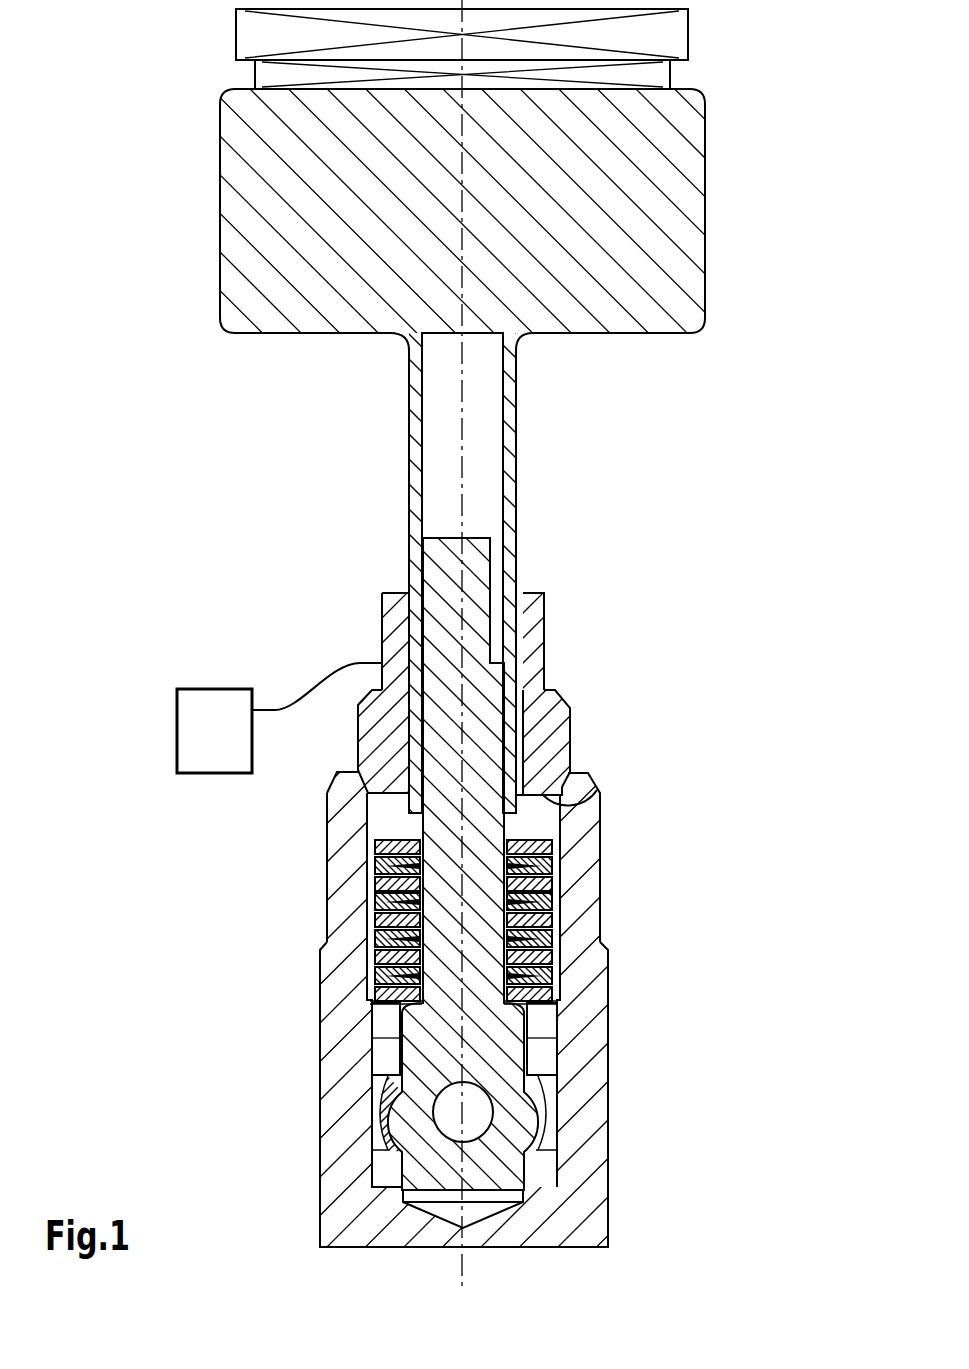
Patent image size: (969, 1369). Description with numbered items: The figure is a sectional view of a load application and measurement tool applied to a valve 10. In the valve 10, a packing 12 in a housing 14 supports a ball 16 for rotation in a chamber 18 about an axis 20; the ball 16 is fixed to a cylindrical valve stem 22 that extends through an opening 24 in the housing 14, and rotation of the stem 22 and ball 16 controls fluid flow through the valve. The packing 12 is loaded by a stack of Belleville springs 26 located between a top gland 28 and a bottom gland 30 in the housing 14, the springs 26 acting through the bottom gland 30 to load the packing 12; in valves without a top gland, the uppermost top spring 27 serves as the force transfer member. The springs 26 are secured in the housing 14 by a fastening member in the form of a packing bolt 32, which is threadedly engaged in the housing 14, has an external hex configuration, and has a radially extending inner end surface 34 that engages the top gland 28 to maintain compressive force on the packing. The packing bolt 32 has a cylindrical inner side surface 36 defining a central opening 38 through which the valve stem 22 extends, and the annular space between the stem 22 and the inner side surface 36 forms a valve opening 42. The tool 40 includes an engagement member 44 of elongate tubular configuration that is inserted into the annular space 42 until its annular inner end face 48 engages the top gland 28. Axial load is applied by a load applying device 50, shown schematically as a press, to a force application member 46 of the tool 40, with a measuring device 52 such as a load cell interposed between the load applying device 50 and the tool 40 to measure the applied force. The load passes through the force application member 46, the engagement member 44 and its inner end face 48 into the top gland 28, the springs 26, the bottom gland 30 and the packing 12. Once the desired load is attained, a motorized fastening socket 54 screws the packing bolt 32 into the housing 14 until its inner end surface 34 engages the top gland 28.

The valve 10 is at (138, 1085).
The packing 12 is at (385, 1057).
The housing 14 is at (320, 1198).
The ball 16 is at (413, 1137).
The chamber 18 is at (555, 1088).
The axis 20 is at (462, 380).
The valve stem 22 is at (475, 575).
The opening 24 is at (365, 813).
The Belleville springs 26 is at (553, 947).
The top spring 27 is at (550, 863).
The top gland 28 is at (555, 837).
The bottom gland 30 is at (538, 1025).
The packing bolt 32 is at (548, 713).
The inner end surface 34 is at (597, 790).
The inner side surface 36 is at (523, 657).
The central opening 38 is at (520, 635).
The tool 40 is at (248, 372).
The valve opening 42 is at (543, 597).
The engagement member 44 is at (409, 510).
The force application member 46 is at (222, 330).
The inner end face 48 is at (400, 830).
The load applying device 50 is at (236, 37).
The measuring device 52 is at (255, 73).
The motorized fastening socket 54 is at (203, 740).